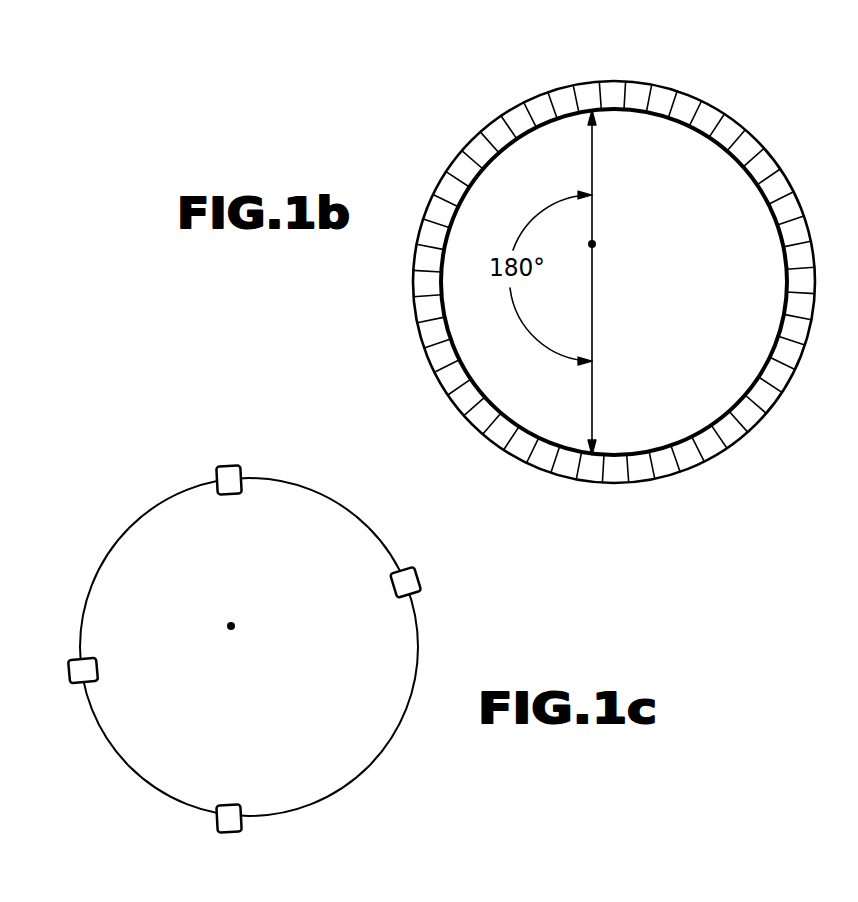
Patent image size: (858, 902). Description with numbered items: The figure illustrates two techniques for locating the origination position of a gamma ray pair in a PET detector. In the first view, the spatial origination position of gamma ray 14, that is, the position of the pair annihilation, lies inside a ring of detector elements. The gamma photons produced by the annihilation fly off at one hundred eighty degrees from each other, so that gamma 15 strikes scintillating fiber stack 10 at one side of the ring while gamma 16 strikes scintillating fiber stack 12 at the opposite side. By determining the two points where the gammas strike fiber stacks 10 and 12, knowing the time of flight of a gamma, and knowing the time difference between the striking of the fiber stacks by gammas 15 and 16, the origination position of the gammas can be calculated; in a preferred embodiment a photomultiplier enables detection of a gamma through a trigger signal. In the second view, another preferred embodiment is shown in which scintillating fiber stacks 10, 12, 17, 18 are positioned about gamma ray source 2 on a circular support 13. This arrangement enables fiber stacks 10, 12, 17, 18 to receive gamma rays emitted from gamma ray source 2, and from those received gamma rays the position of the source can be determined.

In FIG. 1C, the gamma ray source 2 is at (234, 624).
In FIG. 1B, the scintillating fiber stack 10 is at (594, 81).
In FIG. 1C, the scintillating fiber stack 10 is at (222, 466).
In FIG. 1B, the scintillating fiber stack 12 is at (589, 483).
In FIG. 1C, the scintillating fiber stack 12 is at (225, 833).
In FIG. 1C, the support 13 is at (326, 497).
In FIG. 1B, the gamma ray 14 is at (608, 237).
In FIG. 1B, the gamma 15 is at (597, 113).
In FIG. 1B, the gamma 16 is at (596, 452).
In FIG. 1C, the scintillating fiber stack 17 is at (420, 582).
In FIG. 1C, the scintillating fiber stack 18 is at (70, 673).